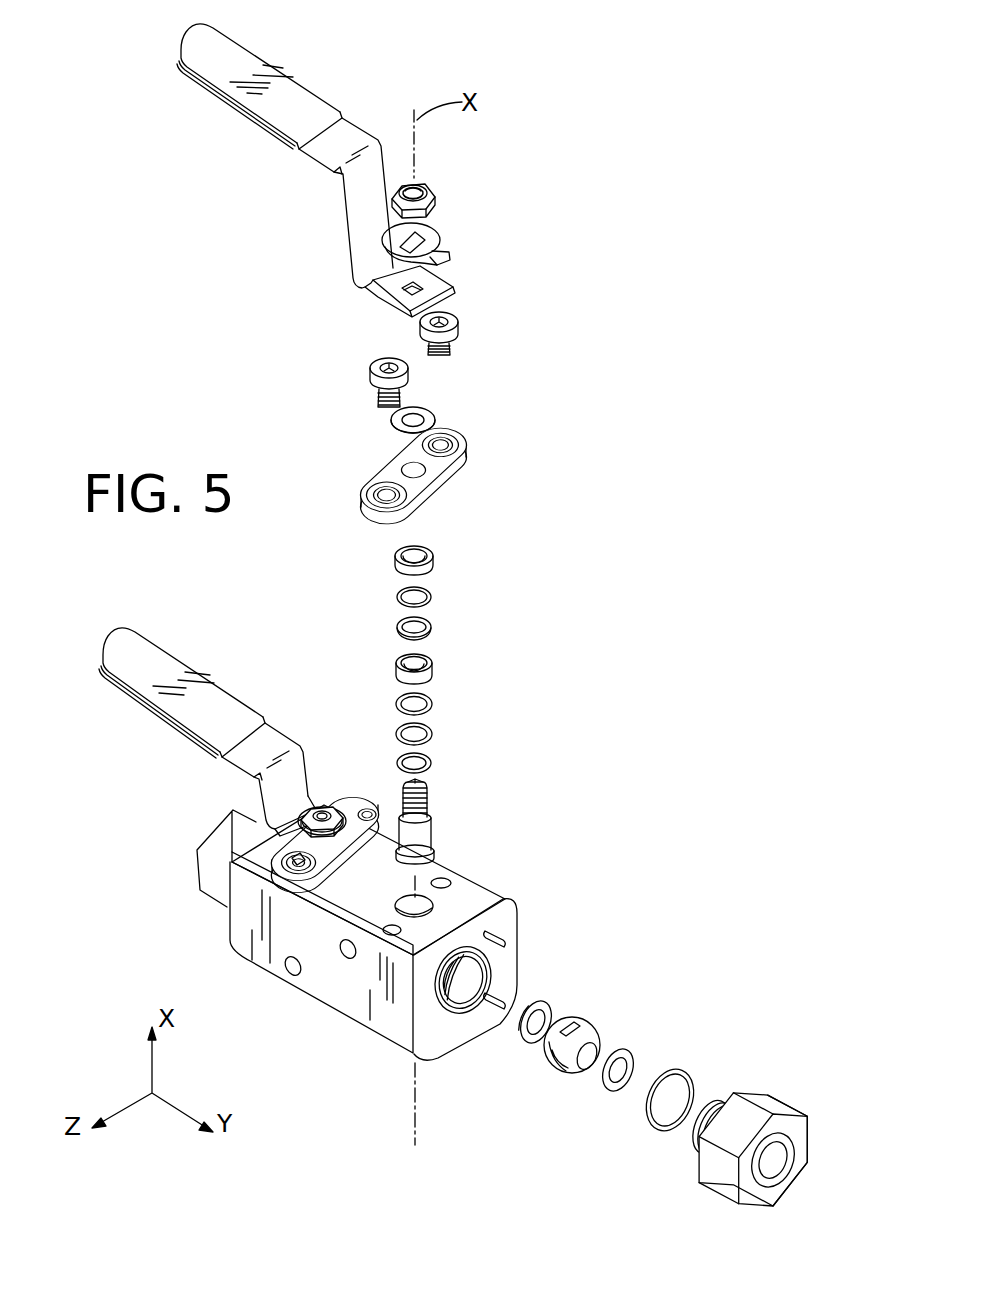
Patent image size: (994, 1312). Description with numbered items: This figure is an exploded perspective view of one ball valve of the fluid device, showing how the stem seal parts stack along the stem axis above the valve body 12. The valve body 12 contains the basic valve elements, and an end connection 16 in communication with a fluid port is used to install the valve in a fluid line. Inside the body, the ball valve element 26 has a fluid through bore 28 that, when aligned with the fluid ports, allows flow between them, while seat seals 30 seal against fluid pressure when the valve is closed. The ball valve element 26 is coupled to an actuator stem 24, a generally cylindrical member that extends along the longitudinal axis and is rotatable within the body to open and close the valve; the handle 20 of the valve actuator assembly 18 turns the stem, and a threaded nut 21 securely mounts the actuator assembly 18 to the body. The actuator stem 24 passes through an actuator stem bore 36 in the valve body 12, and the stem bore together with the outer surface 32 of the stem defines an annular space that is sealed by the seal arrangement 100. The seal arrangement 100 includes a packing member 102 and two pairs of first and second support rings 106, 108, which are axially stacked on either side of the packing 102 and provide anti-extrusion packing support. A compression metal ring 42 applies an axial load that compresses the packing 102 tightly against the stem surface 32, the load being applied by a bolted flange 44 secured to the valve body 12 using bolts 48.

The valve body 12 is at (488, 907).
The end connection 16 is at (195, 856).
The valve actuator assembly 18 is at (328, 796).
The handle 20 is at (311, 89).
The threaded nut 21 is at (437, 194).
The actuator stem 24 is at (434, 832).
The ball valve element 26 is at (590, 1031).
The fluid through bore 28 is at (586, 1071).
The seat seal 30 is at (545, 1003).
The outer surface of the actuator stem 32 is at (429, 822).
The actuator stem bore 36 is at (407, 897).
The metal ring 42 is at (436, 553).
The bolted flange 44 is at (462, 441).
The bolt 48 is at (461, 318).
The seal arrangement 100 is at (597, 580).
The packing member 102 is at (434, 667).
The first support ring 106 is at (433, 627).
The second support ring 108 is at (433, 597).